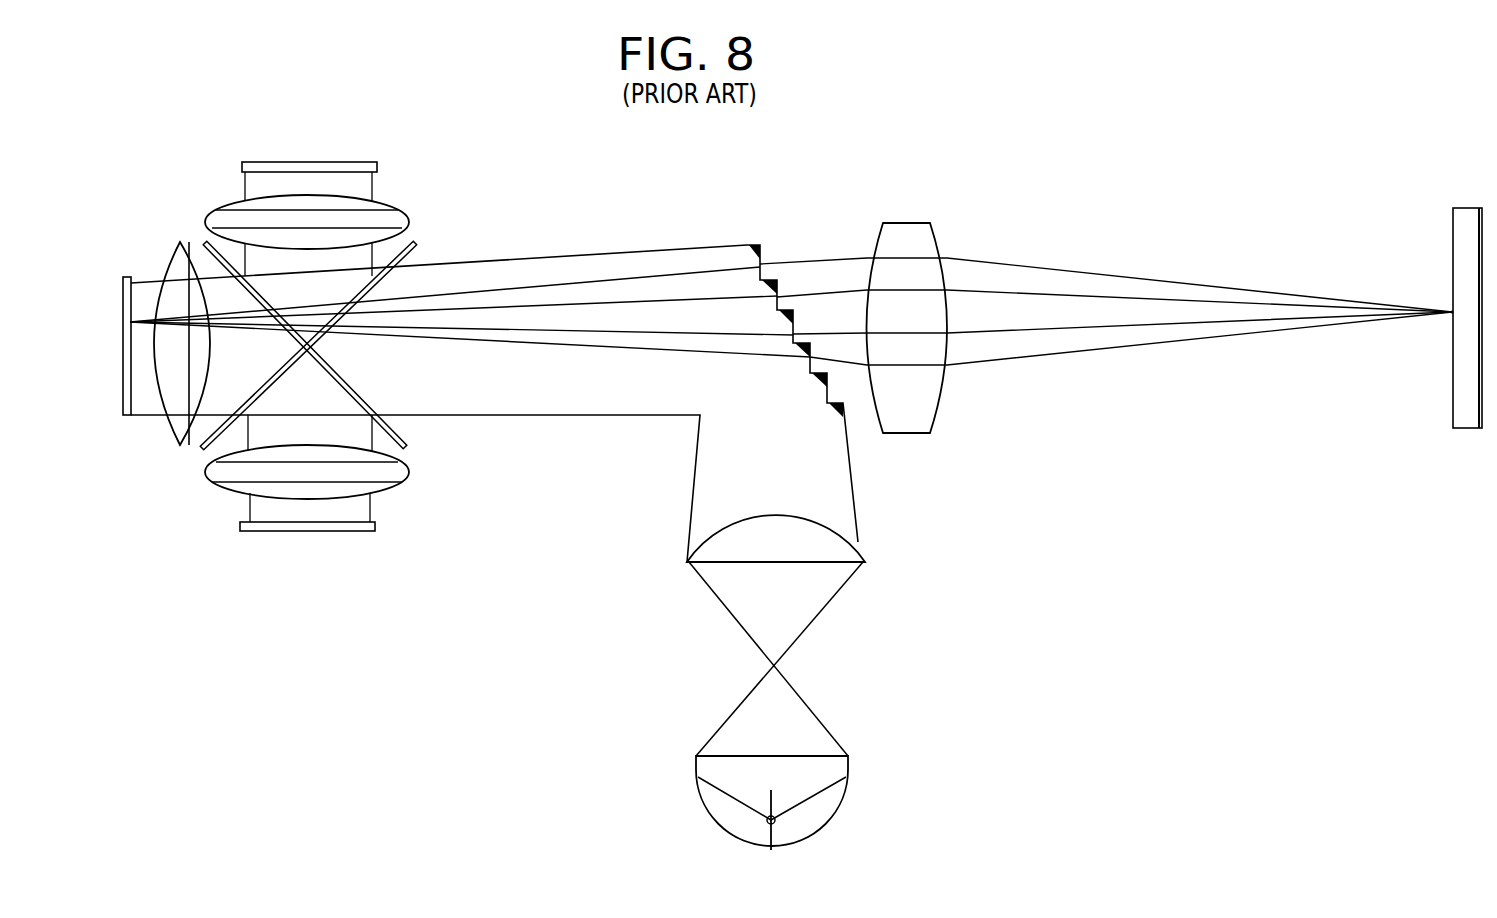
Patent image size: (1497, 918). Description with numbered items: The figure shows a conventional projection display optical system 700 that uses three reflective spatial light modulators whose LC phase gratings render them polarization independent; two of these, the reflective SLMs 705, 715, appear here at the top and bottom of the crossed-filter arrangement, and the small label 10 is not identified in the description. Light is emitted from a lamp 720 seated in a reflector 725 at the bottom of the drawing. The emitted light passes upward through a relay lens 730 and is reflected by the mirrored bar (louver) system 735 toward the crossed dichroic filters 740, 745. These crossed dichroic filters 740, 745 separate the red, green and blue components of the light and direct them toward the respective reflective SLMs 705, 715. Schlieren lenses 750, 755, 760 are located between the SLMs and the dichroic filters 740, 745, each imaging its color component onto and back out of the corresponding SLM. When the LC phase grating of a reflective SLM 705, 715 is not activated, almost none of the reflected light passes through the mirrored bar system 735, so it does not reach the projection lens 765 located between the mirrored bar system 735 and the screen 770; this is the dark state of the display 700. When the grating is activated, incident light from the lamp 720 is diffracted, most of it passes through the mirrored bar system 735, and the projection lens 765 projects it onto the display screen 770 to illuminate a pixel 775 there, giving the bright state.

The light source 10 is at (130, 374).
The optical system 700 is at (458, 636).
The reflective SLM 705 is at (267, 162).
The reflective SLM 715 is at (313, 534).
The lamp 720 is at (768, 822).
The reflector 725 is at (847, 803).
The relay lens 730 is at (687, 560).
The mirrored bar system 735 is at (762, 259).
The crossed dichroic filter 740 is at (413, 253).
The crossed dichroic filter 745 is at (403, 437).
The Schlieren lens 750 is at (393, 208).
The Schlieren lens 755 is at (177, 440).
The Schlieren lens 760 is at (390, 483).
The projection lens 765 is at (943, 403).
The screen 770 is at (1452, 400).
The pixel 775 is at (1452, 316).